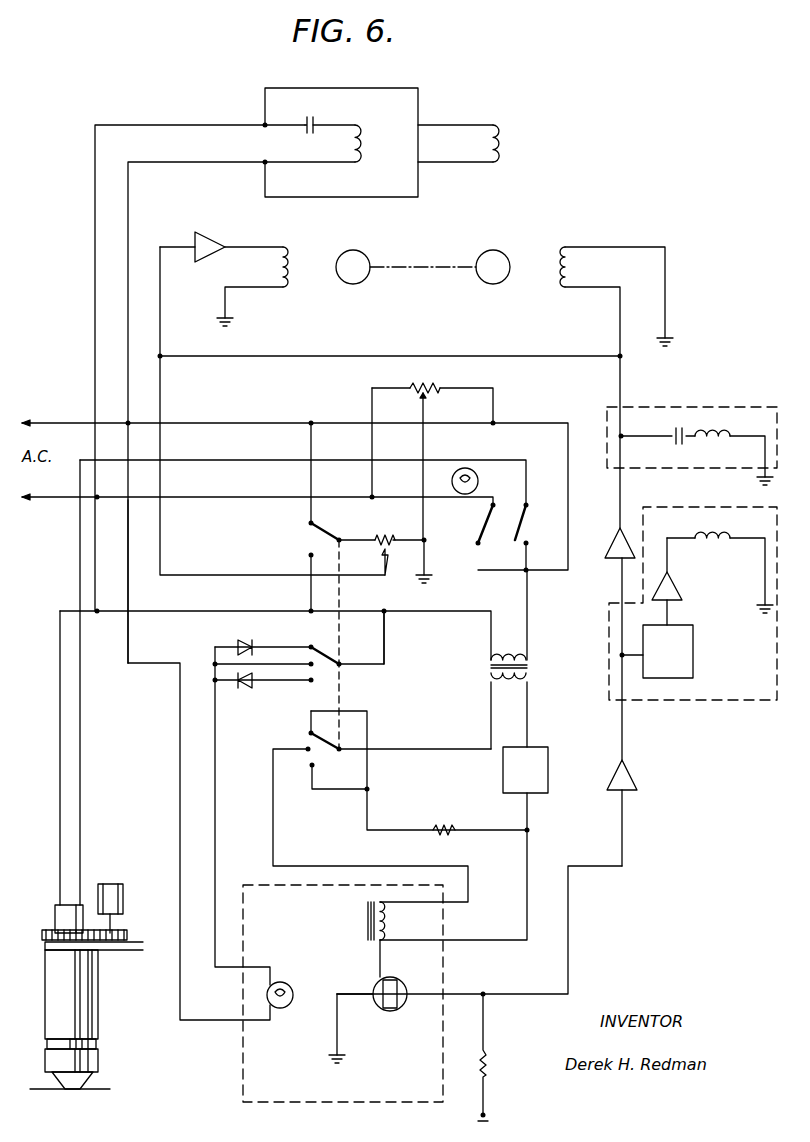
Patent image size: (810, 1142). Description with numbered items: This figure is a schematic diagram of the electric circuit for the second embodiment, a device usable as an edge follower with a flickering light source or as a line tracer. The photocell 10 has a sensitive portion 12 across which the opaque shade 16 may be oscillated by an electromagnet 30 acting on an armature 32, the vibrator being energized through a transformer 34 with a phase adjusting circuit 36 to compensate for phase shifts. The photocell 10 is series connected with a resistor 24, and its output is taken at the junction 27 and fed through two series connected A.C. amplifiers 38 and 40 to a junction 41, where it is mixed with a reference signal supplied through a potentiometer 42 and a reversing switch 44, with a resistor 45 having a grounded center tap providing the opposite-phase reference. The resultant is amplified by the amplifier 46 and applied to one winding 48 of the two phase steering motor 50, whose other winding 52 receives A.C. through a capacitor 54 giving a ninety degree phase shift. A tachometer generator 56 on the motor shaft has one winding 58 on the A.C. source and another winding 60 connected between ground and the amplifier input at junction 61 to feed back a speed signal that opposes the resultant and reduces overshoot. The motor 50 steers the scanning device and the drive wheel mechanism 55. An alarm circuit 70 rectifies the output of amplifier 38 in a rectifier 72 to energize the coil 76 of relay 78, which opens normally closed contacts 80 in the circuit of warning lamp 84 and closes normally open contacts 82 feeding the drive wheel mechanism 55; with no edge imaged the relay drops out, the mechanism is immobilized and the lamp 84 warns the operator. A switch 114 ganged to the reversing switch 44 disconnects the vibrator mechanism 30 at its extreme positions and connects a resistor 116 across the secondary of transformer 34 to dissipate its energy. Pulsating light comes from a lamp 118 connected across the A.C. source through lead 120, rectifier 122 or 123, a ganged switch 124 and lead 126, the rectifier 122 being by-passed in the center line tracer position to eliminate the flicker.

The photocell 10 is at (399, 981).
The sensitive portion 12 is at (398, 1008).
The opaque shade 16 is at (374, 1000).
The resistor 24 is at (487, 1061).
The junction 27 is at (510, 978).
The electromagnet 30 is at (370, 941).
The armature 32 is at (380, 942).
The transformer 34 is at (490, 667).
The phase adjusting circuit 36 is at (548, 761).
The A.C. amplifier 38 is at (634, 780).
The A.C. amplifier 40 is at (608, 554).
The junction 41 is at (164, 357).
The potentiometer 42 is at (388, 529).
The switch 44 is at (313, 543).
The resistor 45 is at (439, 383).
The amplifier 46 is at (208, 236).
The winding 48 is at (290, 272).
The steering motor 50 is at (356, 250).
The winding 52 is at (362, 146).
The capacitor 54 is at (315, 130).
The drive wheel mechanism 55 is at (98, 1001).
The tachometer generator 56 is at (482, 250).
The winding 58 is at (499, 140).
The winding 60 is at (562, 271).
The junction 61 is at (616, 360).
The alarm circuit 70 is at (712, 504).
The rectifier 72 is at (693, 668).
The energizing coil 76 is at (694, 560).
The relay 78 is at (693, 529).
The normally closed contacts 80 is at (483, 518).
The normally open contacts 82 is at (528, 518).
The warning lamp 84 is at (477, 479).
The switch 114 is at (320, 732).
The resistor 116 is at (460, 822).
The lamp 118 is at (304, 988).
The lead 120 is at (128, 592).
The rectifier 122 is at (240, 688).
The rectifier 123 is at (236, 636).
The switch 124 is at (332, 643).
The lead 126 is at (406, 611).